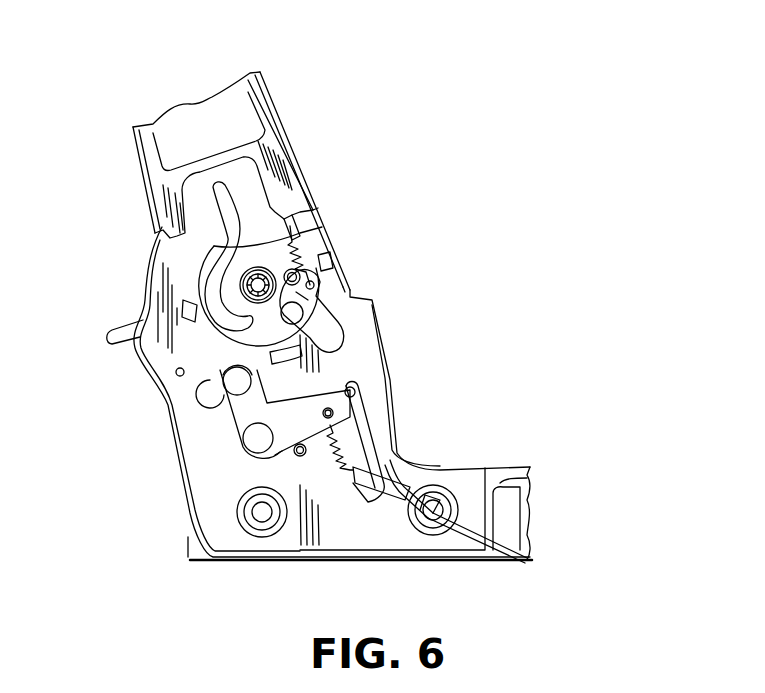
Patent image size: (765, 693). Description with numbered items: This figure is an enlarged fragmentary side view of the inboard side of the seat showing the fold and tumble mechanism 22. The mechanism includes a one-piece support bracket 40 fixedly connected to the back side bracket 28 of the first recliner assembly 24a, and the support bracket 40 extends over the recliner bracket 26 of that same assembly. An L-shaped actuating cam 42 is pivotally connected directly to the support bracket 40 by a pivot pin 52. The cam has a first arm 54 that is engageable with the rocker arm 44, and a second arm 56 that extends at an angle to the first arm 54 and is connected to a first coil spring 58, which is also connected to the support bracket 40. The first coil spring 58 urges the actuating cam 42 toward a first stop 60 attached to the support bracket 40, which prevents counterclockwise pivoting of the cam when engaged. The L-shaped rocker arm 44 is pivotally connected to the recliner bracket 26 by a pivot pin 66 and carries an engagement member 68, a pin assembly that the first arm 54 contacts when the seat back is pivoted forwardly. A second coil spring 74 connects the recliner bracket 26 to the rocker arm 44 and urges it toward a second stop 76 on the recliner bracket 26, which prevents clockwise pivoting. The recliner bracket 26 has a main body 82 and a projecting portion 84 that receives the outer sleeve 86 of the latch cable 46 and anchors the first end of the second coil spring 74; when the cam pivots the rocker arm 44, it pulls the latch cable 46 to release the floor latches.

The fold and tumble mechanism 22 is at (532, 563).
The first recliner assembly 24a is at (348, 212).
The recliner bracket 26 is at (222, 497).
The back side bracket 28 is at (134, 140).
The support bracket 40 is at (252, 190).
The actuating cam 42 is at (381, 323).
The first arm 54 is at (333, 344).
The rocker arm 44 is at (257, 438).
The latch cable 46 is at (380, 450).
The pivot pin 52 is at (296, 313).
The second arm 56 is at (314, 289).
The first coil spring 58 is at (300, 255).
The first stop 60 is at (245, 245).
The pivot pin 66 is at (327, 425).
The engagement member 68 is at (237, 382).
The second coil spring 74 is at (337, 453).
The second stop 76 is at (300, 457).
The main body 82 is at (487, 497).
The projecting portion 84 is at (410, 480).
The outer sleeve 86 is at (410, 500).